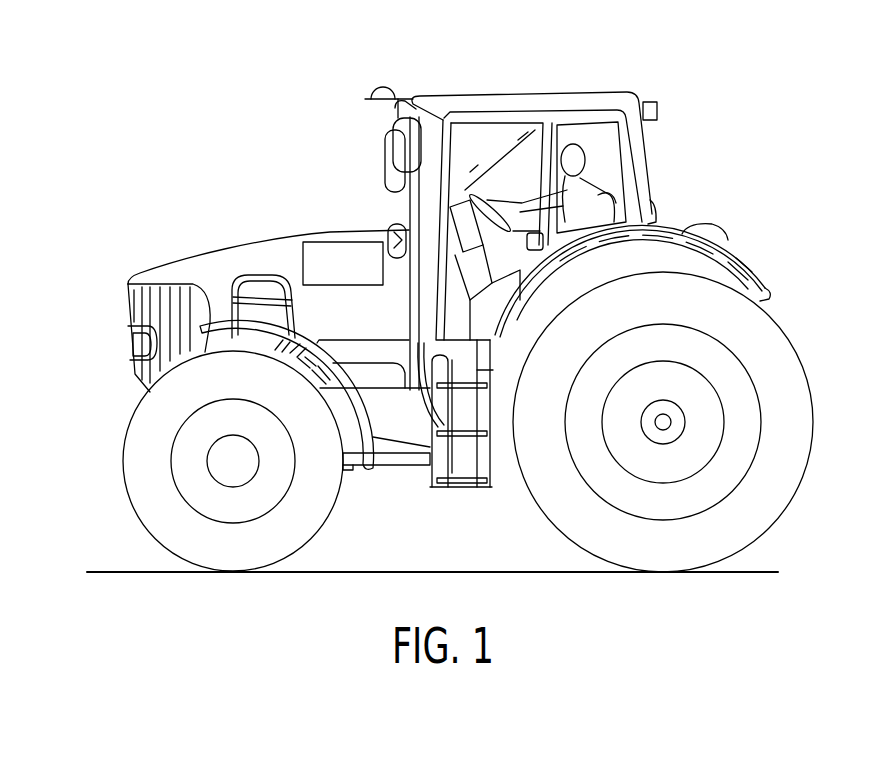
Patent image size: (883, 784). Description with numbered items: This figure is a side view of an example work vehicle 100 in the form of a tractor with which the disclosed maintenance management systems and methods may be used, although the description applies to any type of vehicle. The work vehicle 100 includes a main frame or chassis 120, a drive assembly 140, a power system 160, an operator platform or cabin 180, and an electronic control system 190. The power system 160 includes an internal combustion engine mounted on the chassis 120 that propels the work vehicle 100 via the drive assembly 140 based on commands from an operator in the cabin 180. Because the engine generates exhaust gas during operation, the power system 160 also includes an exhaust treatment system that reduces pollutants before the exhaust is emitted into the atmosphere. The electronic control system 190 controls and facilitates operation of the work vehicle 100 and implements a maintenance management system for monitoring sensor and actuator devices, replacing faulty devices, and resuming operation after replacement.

The work vehicle 100 is at (630, 75).
The main frame or chassis 120 is at (352, 448).
The drive assembly 140 is at (217, 467).
The power system 160 is at (218, 278).
The operator platform or cabin 180 is at (483, 110).
The electronic control system 190 is at (340, 242).